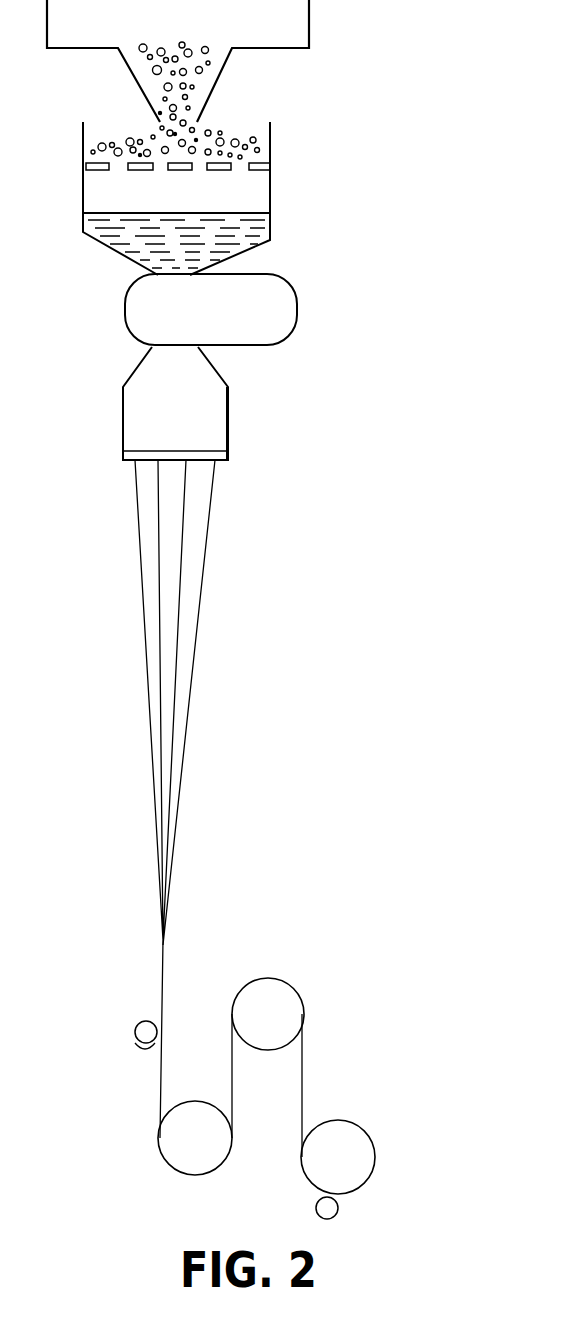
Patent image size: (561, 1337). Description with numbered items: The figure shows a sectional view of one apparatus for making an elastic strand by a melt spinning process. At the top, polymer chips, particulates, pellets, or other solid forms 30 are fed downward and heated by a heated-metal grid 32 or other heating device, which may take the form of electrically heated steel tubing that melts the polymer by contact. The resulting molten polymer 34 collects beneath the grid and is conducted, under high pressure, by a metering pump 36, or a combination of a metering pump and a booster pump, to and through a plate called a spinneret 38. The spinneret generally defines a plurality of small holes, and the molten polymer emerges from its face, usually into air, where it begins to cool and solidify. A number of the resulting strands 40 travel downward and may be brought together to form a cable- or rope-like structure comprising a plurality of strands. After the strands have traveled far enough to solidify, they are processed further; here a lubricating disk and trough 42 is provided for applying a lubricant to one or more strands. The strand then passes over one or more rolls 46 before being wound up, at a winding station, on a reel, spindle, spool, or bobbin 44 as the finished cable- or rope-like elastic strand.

The polymer chips, particulates, pellets, or other solid forms 30 is at (220, 137).
The heated-metal grid 32 is at (265, 165).
The molten polymer 34 is at (245, 235).
The metering pump 36 is at (282, 312).
The spinneret 38 is at (223, 459).
The strands 40 is at (205, 580).
The lubricating disk and trough 42 is at (140, 1032).
The reel, spindle, spool, or bobbin 44 is at (347, 1135).
The rolls 46 is at (285, 993).